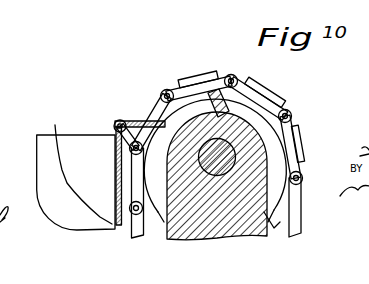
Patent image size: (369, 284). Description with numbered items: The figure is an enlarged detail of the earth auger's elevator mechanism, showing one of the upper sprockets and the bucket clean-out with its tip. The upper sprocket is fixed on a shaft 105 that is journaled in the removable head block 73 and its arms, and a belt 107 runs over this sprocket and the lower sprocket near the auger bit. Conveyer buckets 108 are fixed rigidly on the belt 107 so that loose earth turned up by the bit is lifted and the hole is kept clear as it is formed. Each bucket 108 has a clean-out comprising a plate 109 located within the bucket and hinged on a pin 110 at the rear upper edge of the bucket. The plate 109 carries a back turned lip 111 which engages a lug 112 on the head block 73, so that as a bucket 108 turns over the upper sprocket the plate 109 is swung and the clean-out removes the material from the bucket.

The head block 73 is at (230, 152).
The shaft 105 is at (298, 122).
The belt 107 is at (277, 101).
The conveyer bucket 108 is at (56, 134).
The plate 109 is at (117, 119).
The pin 110 is at (114, 127).
The back turned lip 111 is at (150, 122).
The lug 112 is at (245, 60).